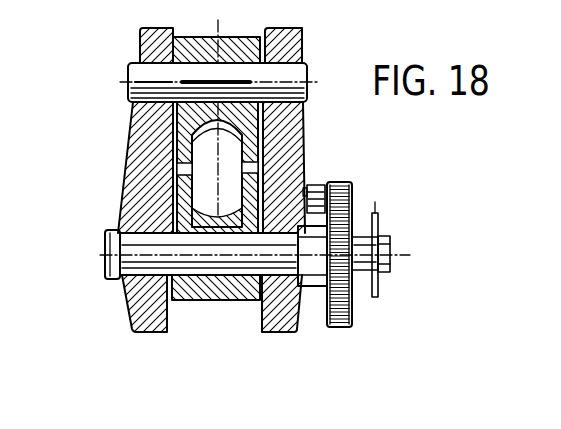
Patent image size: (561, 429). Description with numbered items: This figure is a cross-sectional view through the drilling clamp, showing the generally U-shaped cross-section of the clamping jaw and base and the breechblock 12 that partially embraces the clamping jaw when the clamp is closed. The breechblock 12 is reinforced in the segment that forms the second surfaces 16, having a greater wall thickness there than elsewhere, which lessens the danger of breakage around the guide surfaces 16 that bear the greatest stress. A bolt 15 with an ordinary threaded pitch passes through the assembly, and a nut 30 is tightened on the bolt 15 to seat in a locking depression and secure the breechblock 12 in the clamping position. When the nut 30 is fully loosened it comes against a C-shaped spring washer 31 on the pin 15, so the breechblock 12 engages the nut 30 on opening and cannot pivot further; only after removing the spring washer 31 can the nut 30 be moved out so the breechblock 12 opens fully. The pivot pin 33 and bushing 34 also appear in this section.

The breechblock 12 is at (130, 155).
The bolt 15 is at (188, 302).
The second surfaces 16 is at (130, 305).
The nut 30 is at (353, 318).
The spring washer 31 is at (383, 281).
The shaft 33 is at (161, 304).
The bushing 34 is at (120, 224).